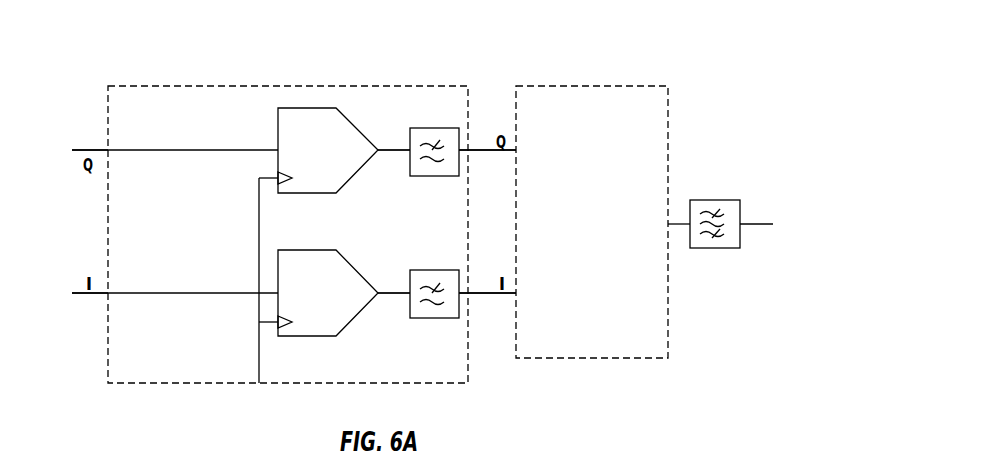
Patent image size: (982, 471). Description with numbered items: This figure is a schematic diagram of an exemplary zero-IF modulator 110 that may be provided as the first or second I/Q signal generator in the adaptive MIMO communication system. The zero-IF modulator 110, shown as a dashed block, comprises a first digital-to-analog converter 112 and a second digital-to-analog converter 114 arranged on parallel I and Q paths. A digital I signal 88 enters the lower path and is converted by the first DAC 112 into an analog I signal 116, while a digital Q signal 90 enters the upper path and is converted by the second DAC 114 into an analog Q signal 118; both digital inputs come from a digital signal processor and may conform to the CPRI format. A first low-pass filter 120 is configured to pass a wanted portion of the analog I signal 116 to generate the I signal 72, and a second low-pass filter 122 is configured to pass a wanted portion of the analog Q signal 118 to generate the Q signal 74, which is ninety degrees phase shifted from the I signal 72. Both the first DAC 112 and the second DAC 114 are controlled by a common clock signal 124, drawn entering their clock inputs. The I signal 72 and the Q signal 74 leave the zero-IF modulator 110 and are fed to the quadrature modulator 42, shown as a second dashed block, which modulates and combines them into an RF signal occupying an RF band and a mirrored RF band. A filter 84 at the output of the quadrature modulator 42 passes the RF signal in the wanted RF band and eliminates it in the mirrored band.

The quadrature modulator 42 is at (626, 86).
The I signal 72 is at (485, 302).
The Q signal 74 is at (481, 144).
The filter 84 is at (715, 200).
The digital I signal 88 is at (90, 302).
The digital Q signal 90 is at (88, 144).
The zero-IF modulator 110 is at (345, 86).
The first digital-to-analog converter 112 is at (355, 318).
The second digital-to-analog converter 114 is at (352, 128).
The analog I signal 116 is at (383, 286).
The analog Q signal 118 is at (393, 157).
The first low-pass filter 120 is at (432, 270).
The second low-pass filter 122 is at (435, 176).
The clock signal 124 is at (255, 352).